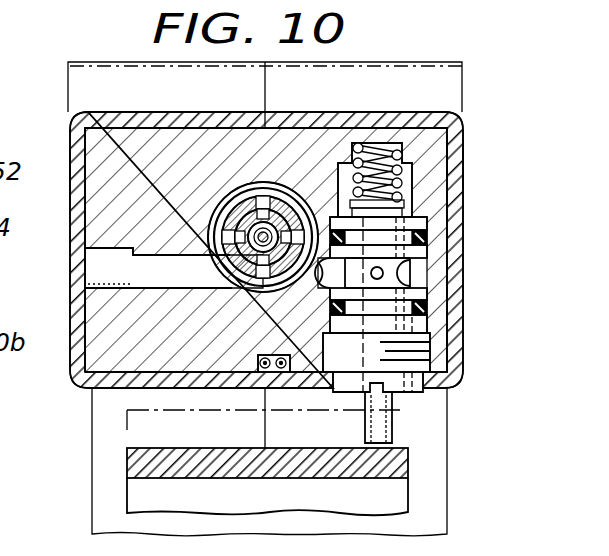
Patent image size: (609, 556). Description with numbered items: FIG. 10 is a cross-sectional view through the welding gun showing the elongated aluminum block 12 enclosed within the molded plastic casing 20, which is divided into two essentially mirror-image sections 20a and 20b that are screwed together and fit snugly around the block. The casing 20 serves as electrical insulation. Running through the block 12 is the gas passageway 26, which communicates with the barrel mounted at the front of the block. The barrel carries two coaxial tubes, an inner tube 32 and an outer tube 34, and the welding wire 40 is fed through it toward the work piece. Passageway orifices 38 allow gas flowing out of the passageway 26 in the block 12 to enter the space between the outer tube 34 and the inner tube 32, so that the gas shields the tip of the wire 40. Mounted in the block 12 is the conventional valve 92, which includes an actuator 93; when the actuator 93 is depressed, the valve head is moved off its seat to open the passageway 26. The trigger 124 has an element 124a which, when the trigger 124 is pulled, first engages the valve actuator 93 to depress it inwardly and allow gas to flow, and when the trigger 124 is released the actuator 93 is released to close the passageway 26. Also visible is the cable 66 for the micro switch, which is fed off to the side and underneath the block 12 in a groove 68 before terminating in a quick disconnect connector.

The block 12 is at (318, 152).
The casing 20 is at (165, 113).
The casing section 20a is at (70, 152).
The casing section 20b is at (455, 140).
The passageway 26 is at (325, 277).
The inner tube 32 is at (230, 262).
The outer tube 34 is at (226, 196).
The passageway orifices 38 is at (226, 234).
The wire 40 is at (263, 230).
The cable 66 is at (283, 368).
The groove 68 is at (264, 355).
The valve 92 is at (414, 273).
The actuator 93 is at (392, 424).
The trigger 124 is at (122, 429).
The element 124a is at (302, 478).